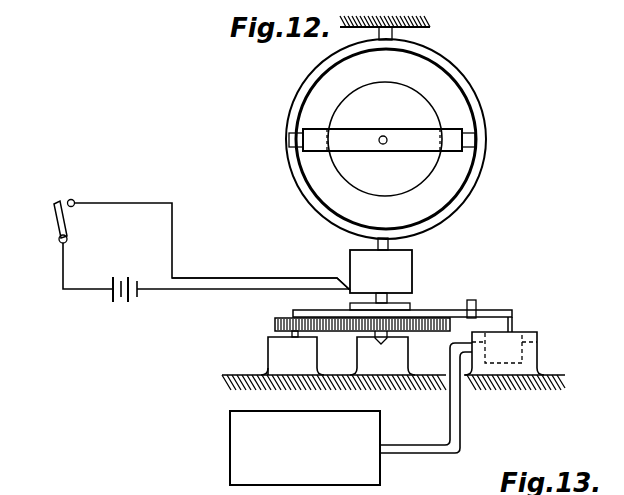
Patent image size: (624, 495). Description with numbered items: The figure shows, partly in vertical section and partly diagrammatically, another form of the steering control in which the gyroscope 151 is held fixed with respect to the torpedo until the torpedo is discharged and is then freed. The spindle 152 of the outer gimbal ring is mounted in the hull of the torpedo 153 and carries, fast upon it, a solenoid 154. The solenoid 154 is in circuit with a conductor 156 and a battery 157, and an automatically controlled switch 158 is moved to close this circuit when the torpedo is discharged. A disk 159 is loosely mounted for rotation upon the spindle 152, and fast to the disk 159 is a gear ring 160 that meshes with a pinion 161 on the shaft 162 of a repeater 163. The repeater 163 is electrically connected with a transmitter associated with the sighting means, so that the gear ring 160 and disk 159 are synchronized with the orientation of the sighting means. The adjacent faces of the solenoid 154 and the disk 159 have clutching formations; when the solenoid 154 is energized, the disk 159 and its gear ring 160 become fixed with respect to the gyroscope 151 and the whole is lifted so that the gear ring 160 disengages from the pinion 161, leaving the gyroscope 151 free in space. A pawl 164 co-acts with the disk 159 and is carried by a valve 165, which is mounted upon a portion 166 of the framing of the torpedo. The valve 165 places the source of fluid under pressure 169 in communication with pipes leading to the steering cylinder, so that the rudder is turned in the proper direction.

The gyroscope 151 is at (472, 70).
The spindle 152 is at (389, 244).
The hull of the torpedo 153 is at (262, 385).
The solenoid 154 is at (405, 272).
The conductor 156 is at (231, 273).
The battery 157 is at (117, 284).
The automatically controlled switch 158 is at (55, 221).
The disk 159 is at (297, 312).
The gear ring 160 is at (392, 322).
The pinion 161 is at (278, 323).
The shaft 162 is at (292, 334).
The repeater 163 is at (272, 353).
The pawl 164 is at (472, 300).
The valve 165 is at (203, 290).
The portion of the framing of the torpedo 166 is at (540, 343).
The source of fluid under pressure 169 is at (243, 440).